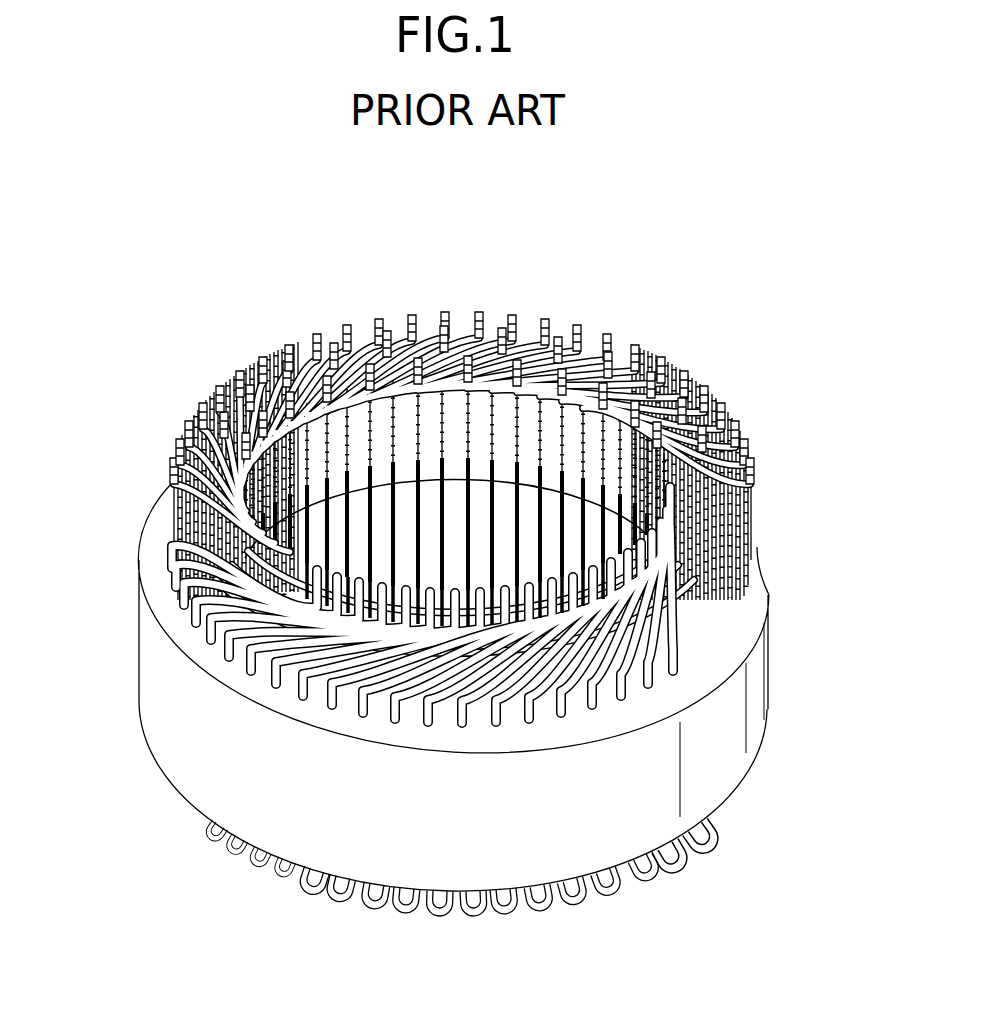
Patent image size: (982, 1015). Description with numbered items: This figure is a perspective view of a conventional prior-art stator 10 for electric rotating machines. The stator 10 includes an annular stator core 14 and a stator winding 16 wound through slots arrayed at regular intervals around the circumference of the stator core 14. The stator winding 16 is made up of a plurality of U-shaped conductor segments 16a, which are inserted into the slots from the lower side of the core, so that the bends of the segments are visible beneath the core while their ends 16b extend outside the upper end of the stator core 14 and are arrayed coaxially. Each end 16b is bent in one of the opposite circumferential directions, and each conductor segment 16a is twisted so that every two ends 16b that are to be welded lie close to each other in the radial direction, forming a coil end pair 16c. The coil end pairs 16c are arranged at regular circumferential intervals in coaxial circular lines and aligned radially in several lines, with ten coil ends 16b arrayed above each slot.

The stator 10 is at (477, 272).
The stator core 14 is at (757, 570).
The stator winding 16 is at (177, 533).
The U-shaped conductor segment 16a is at (243, 612).
The end of conductor segment 16b is at (305, 618).
The coil end pair 16c is at (341, 338).